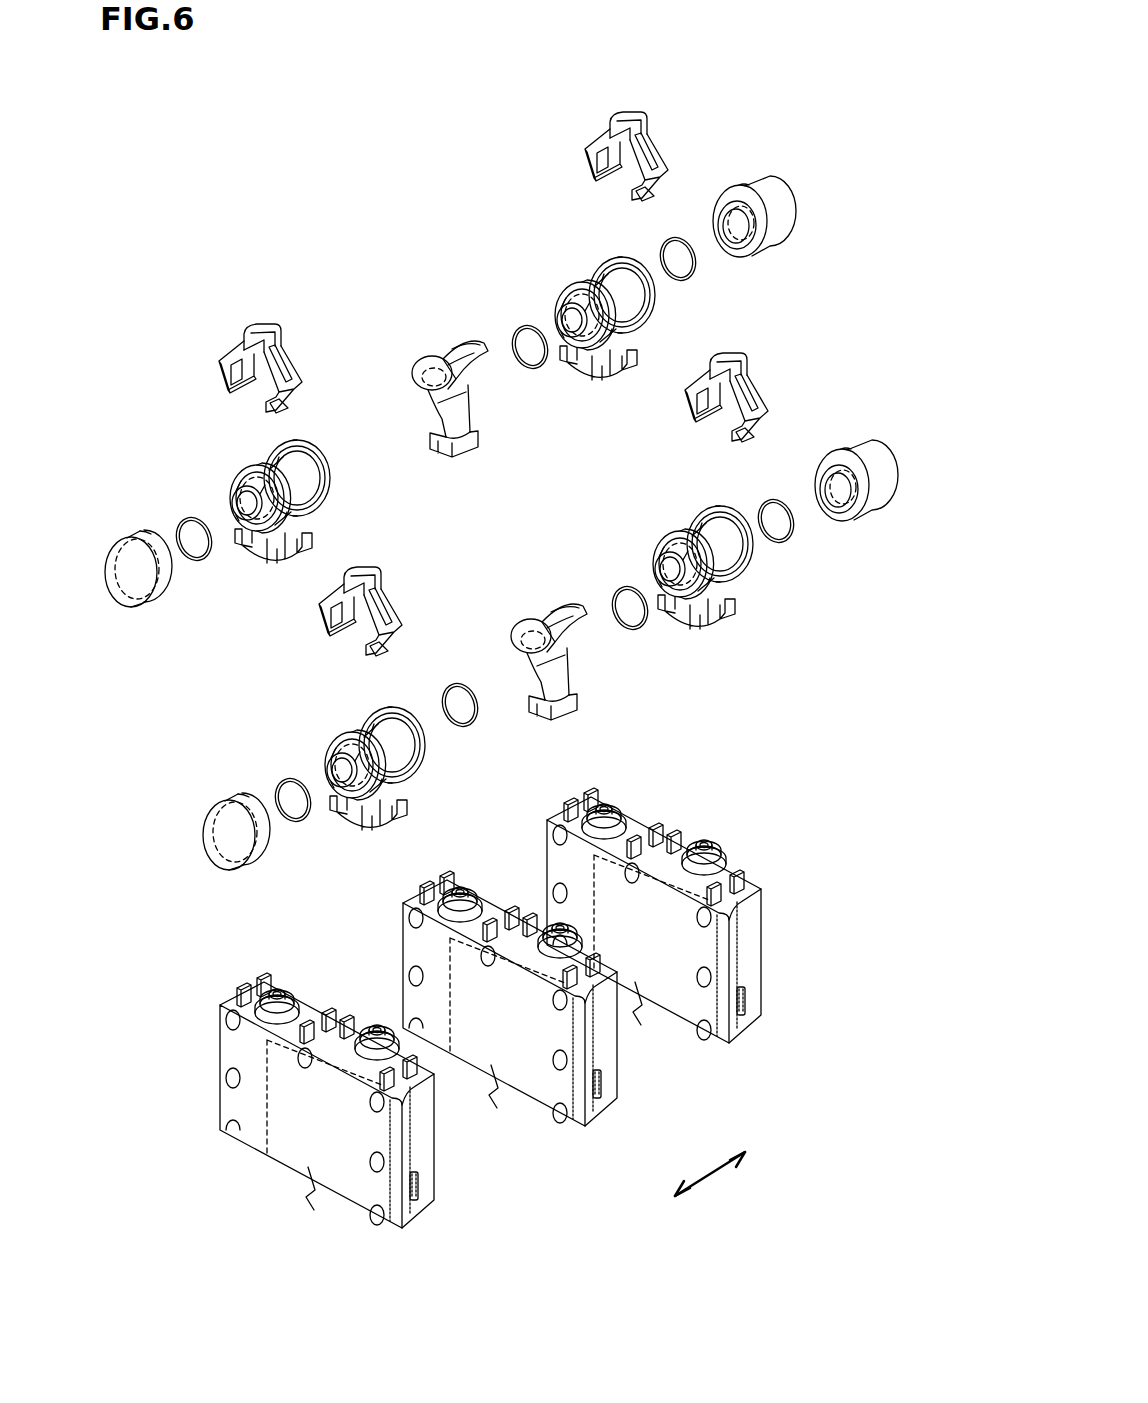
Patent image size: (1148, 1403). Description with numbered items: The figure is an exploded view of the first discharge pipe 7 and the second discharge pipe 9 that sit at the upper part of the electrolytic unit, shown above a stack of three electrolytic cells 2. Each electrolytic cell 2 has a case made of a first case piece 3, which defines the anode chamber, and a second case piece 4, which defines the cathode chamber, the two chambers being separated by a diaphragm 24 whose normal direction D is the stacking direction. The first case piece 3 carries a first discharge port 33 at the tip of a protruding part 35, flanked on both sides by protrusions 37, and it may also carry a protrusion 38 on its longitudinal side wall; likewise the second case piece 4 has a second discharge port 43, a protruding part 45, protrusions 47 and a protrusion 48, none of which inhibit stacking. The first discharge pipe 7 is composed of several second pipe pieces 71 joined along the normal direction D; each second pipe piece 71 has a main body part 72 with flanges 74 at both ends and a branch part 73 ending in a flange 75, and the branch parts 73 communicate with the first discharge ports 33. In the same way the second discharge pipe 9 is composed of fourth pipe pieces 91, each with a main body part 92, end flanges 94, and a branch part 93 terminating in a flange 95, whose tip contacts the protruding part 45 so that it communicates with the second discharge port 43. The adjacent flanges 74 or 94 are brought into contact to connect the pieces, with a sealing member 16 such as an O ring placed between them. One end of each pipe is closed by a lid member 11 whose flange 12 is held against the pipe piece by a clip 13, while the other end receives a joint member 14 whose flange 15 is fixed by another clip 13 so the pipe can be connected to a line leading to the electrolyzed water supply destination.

The electrolytic cell 2 is at (525, 1075).
The first case piece 3 is at (555, 865).
The second case piece 4 is at (745, 955).
The first discharge pipe 7 is at (420, 255).
The second discharge pipe 9 is at (683, 681).
The lid member 11 is at (138, 568).
The flange 12 is at (152, 600).
The clip 13 is at (627, 112).
The joint member 14 is at (775, 200).
The flange 15 is at (724, 190).
The sealing member 16 is at (528, 325).
The diaphragm 24 is at (660, 938).
The first discharge port 33 is at (279, 1000).
The protruding part 35 is at (612, 808).
The protrusion 37 is at (648, 826).
The protrusion 38 is at (420, 1195).
The second discharge port 43 is at (377, 1030).
The protruding part 45 is at (712, 856).
The protrusion 47 is at (680, 843).
The protrusion 48 is at (766, 1000).
The second pipe piece 71 is at (598, 300).
The main body part 72 is at (432, 402).
The branch part 73 is at (452, 437).
The flange 74 is at (280, 440).
The flange 75 is at (637, 350).
The fourth pipe piece 91 is at (705, 545).
The main body part 92 is at (528, 665).
The branch part 93 is at (560, 690).
The flange 94 is at (530, 628).
The flange 95 is at (420, 812).
The normal direction D is at (710, 1178).